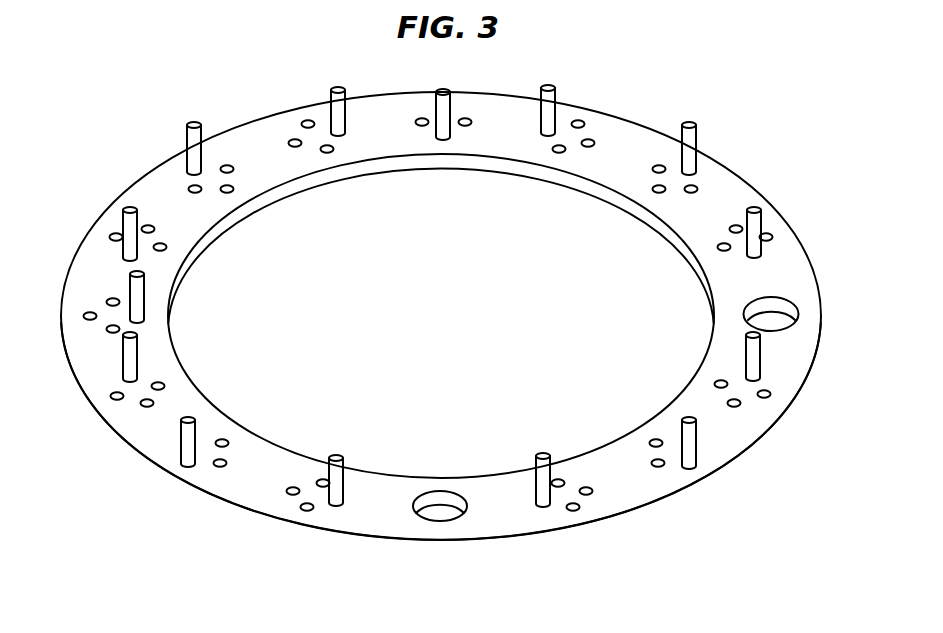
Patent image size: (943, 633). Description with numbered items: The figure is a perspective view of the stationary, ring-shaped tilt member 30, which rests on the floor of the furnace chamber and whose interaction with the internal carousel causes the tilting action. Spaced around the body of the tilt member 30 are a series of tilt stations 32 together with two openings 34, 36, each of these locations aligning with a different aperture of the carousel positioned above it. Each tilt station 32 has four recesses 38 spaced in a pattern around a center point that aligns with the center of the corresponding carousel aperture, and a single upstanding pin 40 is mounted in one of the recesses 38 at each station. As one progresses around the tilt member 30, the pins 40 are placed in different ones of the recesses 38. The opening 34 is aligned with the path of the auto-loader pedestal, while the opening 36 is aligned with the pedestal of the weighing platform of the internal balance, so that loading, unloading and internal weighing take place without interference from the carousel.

The tilt member 30 is at (791, 255).
The tilt station 32 is at (264, 130).
The opening 34 is at (450, 516).
The opening 36 is at (777, 312).
The recess 38 is at (115, 236).
The upstanding pin 40 is at (200, 133).